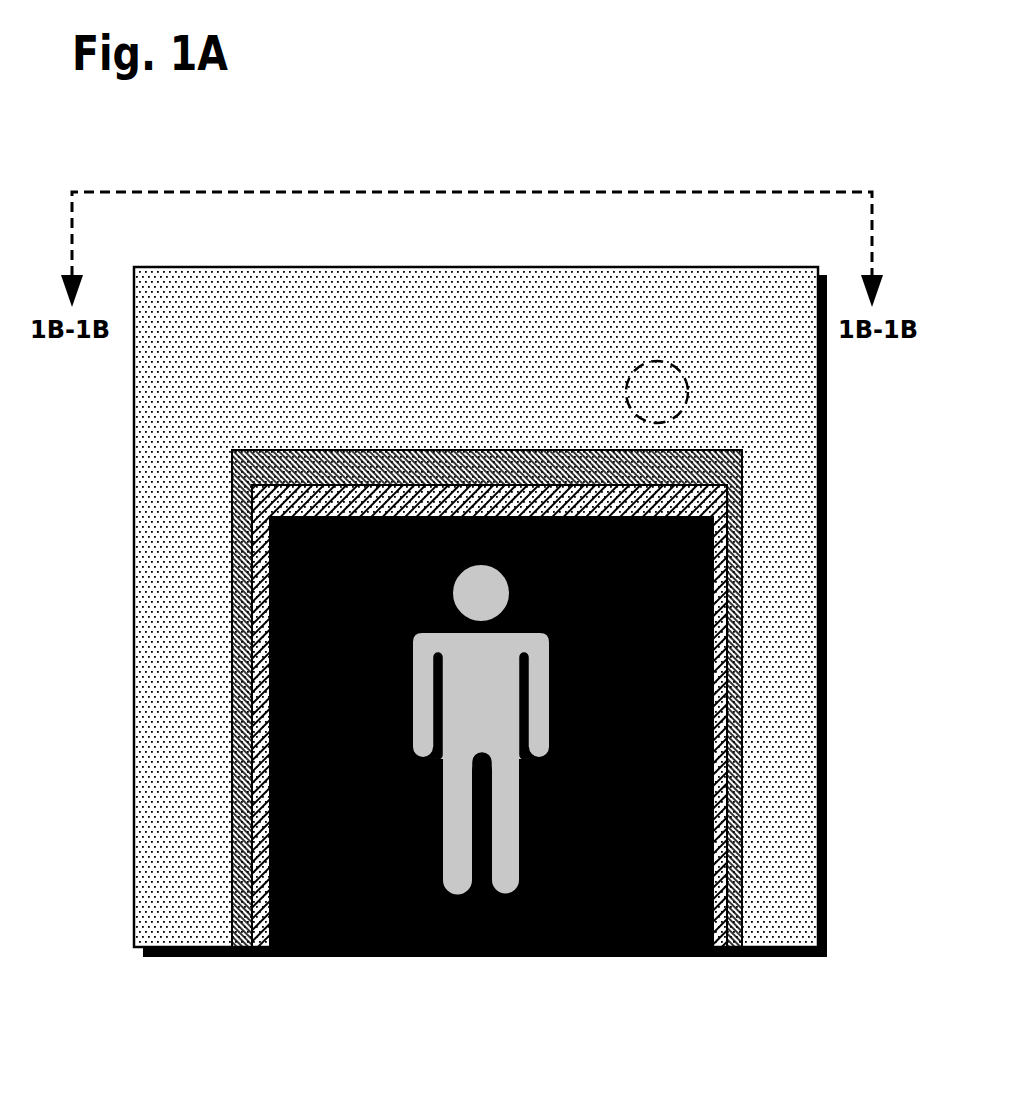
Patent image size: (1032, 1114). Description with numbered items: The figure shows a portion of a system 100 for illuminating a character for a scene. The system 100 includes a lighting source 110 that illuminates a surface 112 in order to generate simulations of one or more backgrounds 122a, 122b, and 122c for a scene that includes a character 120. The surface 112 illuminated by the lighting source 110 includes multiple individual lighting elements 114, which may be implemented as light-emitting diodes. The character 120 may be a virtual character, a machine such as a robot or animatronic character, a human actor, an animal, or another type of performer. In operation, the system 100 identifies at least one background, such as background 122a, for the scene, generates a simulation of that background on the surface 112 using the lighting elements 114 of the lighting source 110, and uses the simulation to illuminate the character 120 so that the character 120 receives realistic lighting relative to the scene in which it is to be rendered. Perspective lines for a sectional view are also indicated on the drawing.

The system 100 is at (818, 131).
The lighting source 110 is at (827, 548).
The surface 112 is at (740, 344).
The lighting elements 114 is at (628, 381).
The character 120 is at (500, 700).
The background 122a is at (655, 594).
The background 122b is at (525, 500).
The background 122c is at (372, 449).